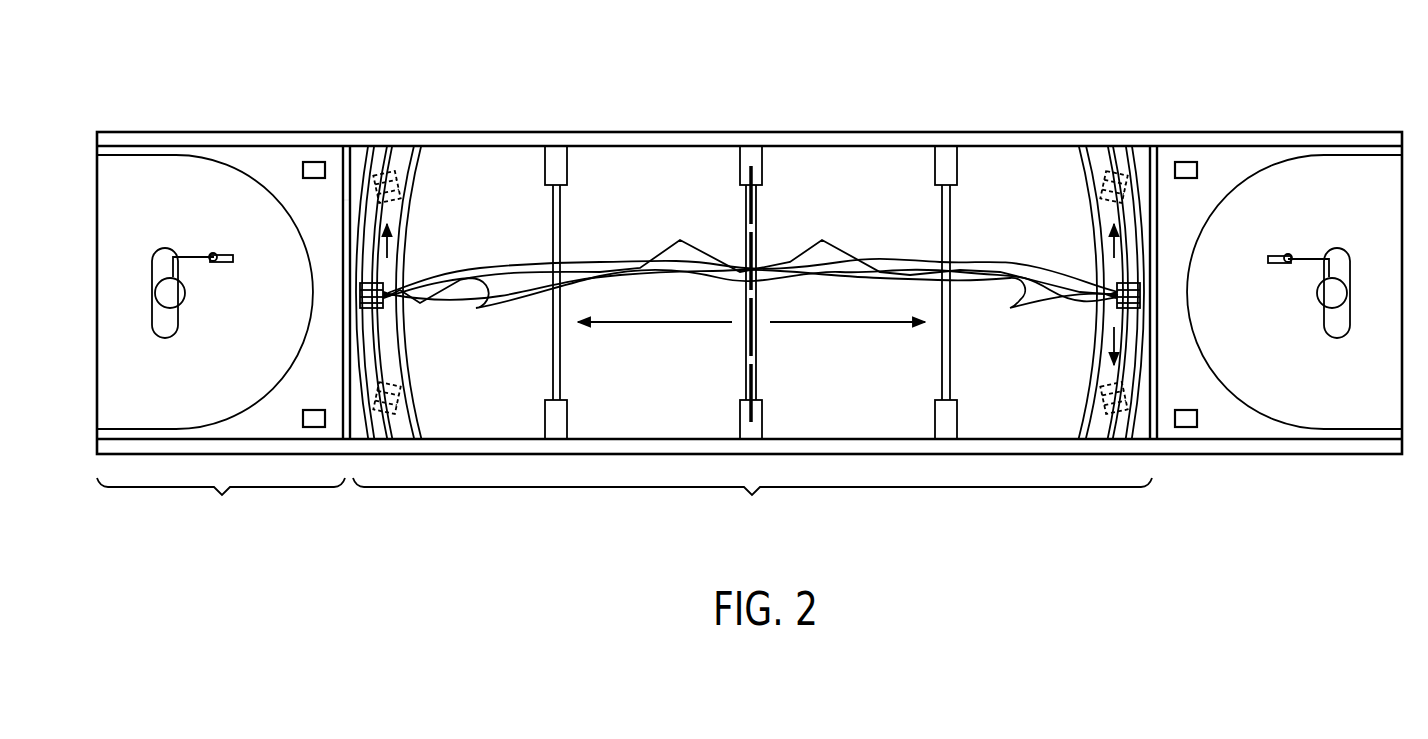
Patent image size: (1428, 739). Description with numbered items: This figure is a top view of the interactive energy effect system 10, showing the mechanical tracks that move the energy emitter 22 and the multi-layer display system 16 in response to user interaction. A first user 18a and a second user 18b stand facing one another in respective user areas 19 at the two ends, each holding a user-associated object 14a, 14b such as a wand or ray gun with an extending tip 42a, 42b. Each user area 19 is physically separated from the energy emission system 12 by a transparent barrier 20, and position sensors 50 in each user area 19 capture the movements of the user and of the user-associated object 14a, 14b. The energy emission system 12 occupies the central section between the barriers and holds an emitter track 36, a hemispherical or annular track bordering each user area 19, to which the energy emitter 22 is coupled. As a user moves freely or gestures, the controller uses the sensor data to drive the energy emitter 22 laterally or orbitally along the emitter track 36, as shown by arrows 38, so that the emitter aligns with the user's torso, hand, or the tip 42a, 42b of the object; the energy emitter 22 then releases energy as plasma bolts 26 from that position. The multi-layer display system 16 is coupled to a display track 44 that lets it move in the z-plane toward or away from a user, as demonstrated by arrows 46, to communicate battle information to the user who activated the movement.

The interactive energy effect system 10 is at (1030, 44).
The energy emission system 12 is at (752, 503).
The user-associated object 14a is at (200, 289).
The user-associated object 14b is at (1307, 291).
The multi-layer display system 16 is at (552, 218).
The first user 18a is at (175, 298).
The second user 18b is at (1343, 294).
The user area 19 is at (749, 342).
The transparent barrier 20 is at (347, 200).
The energy emitter 22 is at (1110, 196).
The plasma bolts 26 is at (1044, 260).
The emitter track 36 is at (1084, 415).
The arrows 38 is at (1110, 345).
The tip 42a is at (226, 264).
The tip 42b is at (1268, 260).
The display track 44 is at (757, 166).
The arrows 46 is at (848, 326).
The position sensors 50 is at (303, 416).